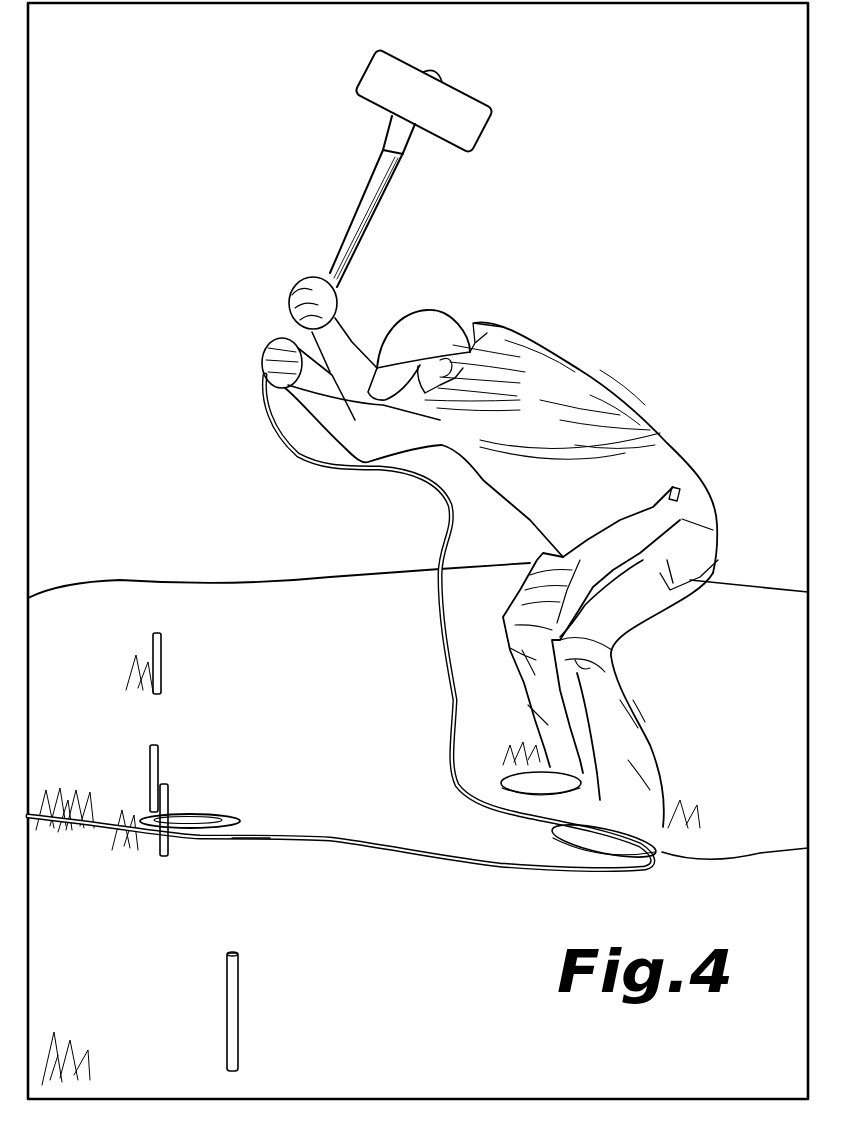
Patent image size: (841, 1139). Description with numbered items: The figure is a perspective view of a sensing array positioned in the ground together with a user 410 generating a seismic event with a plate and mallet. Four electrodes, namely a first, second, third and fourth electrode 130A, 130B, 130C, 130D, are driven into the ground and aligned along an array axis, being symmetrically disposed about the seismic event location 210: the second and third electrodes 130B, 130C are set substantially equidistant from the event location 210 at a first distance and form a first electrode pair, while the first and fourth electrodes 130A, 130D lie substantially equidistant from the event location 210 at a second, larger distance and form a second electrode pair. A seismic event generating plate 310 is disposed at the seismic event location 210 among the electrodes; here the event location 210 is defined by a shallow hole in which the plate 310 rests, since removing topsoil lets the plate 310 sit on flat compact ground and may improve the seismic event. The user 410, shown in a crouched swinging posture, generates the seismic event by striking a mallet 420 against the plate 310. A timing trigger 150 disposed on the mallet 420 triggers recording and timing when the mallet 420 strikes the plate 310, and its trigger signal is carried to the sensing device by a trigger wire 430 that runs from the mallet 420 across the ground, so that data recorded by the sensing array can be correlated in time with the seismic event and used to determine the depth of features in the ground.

The timing trigger 150 is at (453, 155).
The mallet 420 is at (473, 97).
The user 410 is at (597, 372).
The trigger wire 430 is at (440, 547).
The first electrode 130A is at (150, 652).
The second electrode 130B is at (148, 765).
The third electrode 130C is at (158, 815).
The fourth electrode 130D is at (225, 1010).
The seismic event generating plate 310 is at (205, 812).
The seismic event location 210 is at (240, 808).